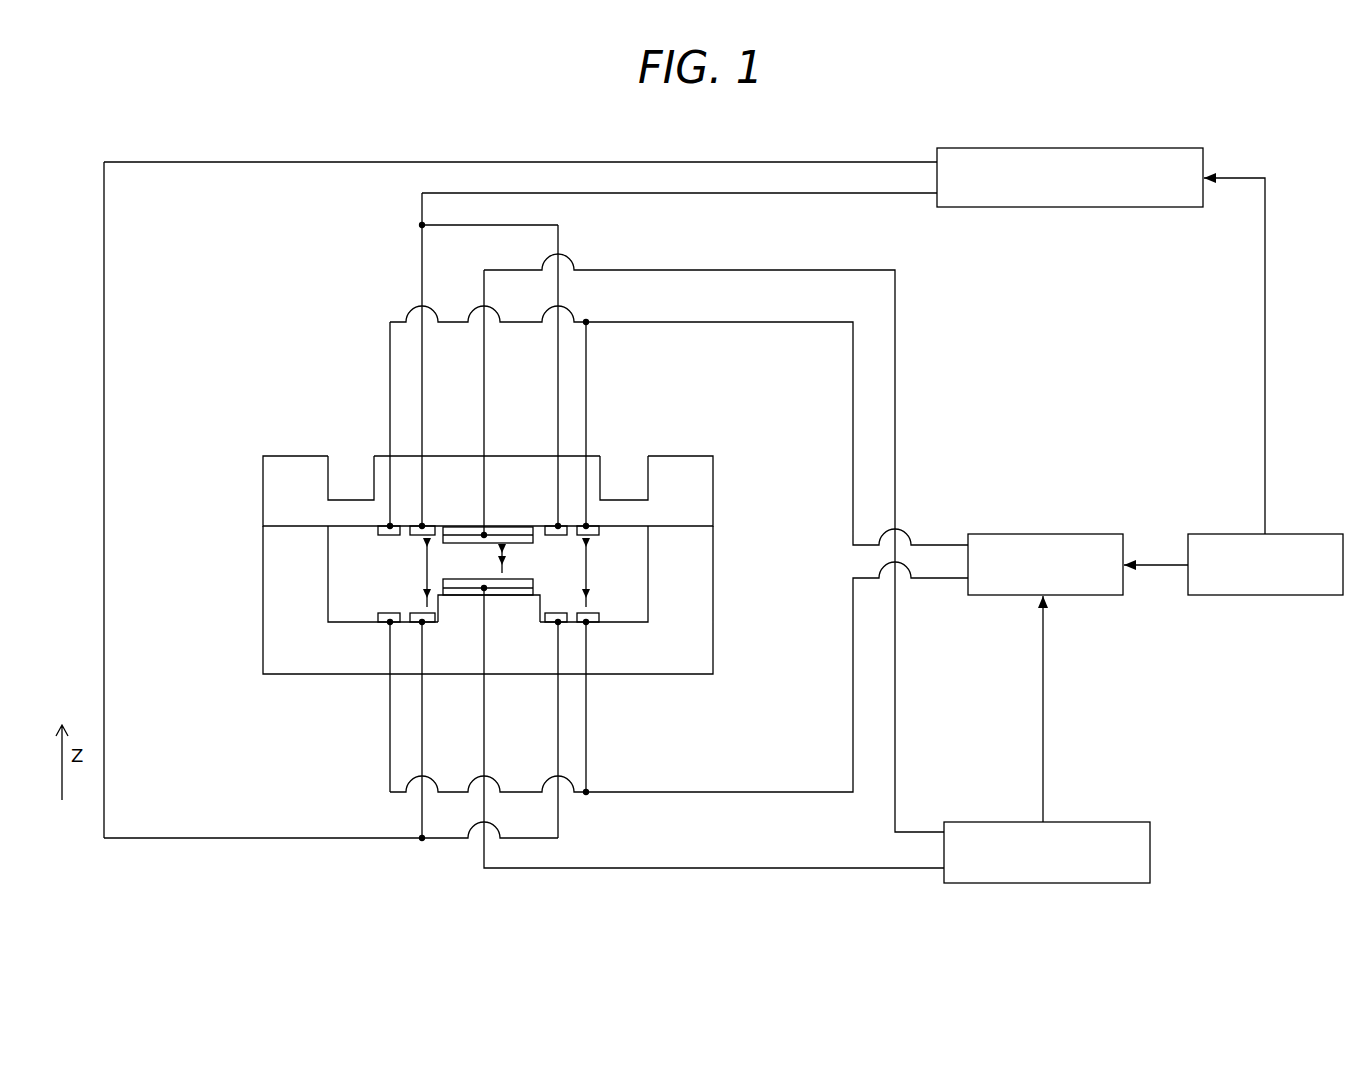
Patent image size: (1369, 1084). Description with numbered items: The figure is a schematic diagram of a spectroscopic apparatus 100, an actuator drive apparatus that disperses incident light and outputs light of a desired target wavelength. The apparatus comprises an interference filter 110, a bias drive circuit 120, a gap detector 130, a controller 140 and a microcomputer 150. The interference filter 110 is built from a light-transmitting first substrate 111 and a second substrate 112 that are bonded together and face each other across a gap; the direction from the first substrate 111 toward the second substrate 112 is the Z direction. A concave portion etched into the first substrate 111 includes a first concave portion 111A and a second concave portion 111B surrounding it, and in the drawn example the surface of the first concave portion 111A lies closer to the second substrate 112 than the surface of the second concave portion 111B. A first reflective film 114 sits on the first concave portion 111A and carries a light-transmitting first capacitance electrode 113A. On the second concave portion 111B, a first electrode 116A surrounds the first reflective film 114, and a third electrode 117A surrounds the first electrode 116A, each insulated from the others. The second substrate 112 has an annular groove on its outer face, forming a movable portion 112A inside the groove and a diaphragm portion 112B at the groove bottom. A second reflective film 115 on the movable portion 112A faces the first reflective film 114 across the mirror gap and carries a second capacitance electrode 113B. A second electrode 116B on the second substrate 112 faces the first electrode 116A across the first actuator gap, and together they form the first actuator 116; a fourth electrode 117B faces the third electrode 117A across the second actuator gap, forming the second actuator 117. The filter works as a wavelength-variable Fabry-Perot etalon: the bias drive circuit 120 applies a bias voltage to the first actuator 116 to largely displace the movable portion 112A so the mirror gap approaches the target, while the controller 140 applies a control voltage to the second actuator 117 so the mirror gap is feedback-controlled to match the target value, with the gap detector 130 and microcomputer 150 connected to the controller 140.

The spectroscopic apparatus 100 is at (1289, 187).
The interference filter 110 is at (482, 670).
The first substrate 111 is at (445, 647).
The first concave portion 111A is at (518, 596).
The second concave portion 111B is at (326, 617).
The second substrate 112 is at (487, 456).
The movable portion 112A is at (592, 455).
The diaphragm portion 112B is at (348, 508).
The first capacitance electrode 113A is at (480, 657).
The second capacitance electrode 113B is at (487, 473).
The first reflective film 114 is at (467, 585).
The second reflective film 115 is at (465, 527).
The first actuator 116 is at (277, 572).
The first electrode 116A is at (412, 613).
The second electrode 116B is at (412, 537).
The second actuator 117 is at (711, 574).
The third electrode 117A is at (600, 614).
The fourth electrode 117B is at (600, 533).
The bias drive circuit 120 is at (1070, 207).
The gap detector 130 is at (1082, 820).
The controller 140 is at (1047, 532).
The microcomputer 150 is at (1267, 595).